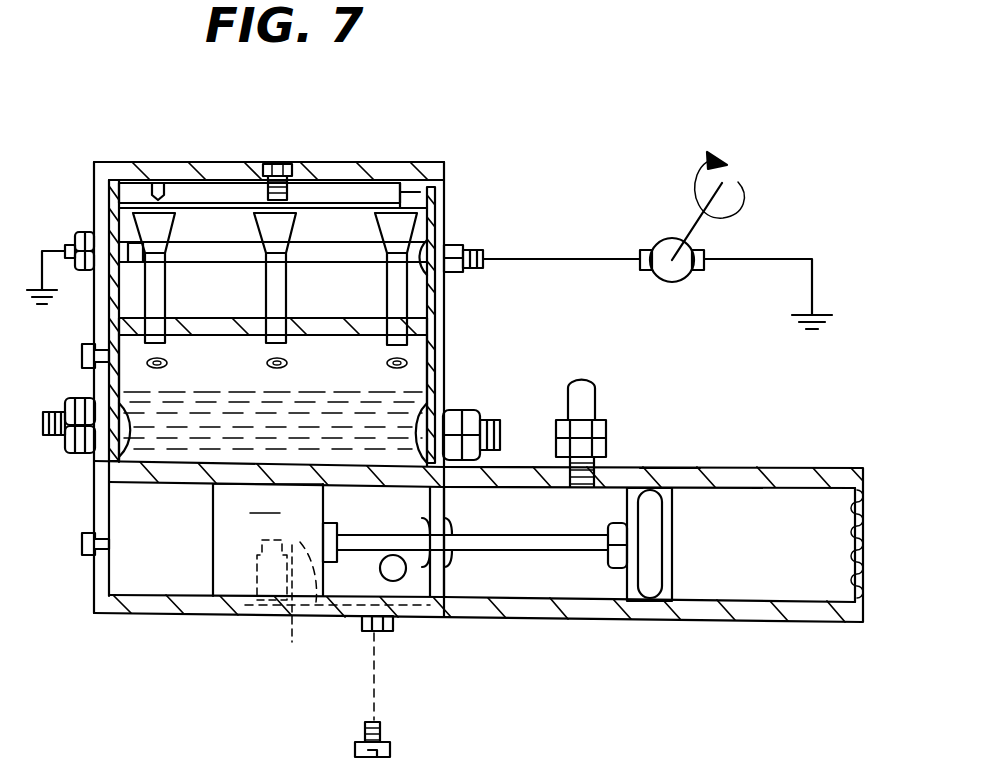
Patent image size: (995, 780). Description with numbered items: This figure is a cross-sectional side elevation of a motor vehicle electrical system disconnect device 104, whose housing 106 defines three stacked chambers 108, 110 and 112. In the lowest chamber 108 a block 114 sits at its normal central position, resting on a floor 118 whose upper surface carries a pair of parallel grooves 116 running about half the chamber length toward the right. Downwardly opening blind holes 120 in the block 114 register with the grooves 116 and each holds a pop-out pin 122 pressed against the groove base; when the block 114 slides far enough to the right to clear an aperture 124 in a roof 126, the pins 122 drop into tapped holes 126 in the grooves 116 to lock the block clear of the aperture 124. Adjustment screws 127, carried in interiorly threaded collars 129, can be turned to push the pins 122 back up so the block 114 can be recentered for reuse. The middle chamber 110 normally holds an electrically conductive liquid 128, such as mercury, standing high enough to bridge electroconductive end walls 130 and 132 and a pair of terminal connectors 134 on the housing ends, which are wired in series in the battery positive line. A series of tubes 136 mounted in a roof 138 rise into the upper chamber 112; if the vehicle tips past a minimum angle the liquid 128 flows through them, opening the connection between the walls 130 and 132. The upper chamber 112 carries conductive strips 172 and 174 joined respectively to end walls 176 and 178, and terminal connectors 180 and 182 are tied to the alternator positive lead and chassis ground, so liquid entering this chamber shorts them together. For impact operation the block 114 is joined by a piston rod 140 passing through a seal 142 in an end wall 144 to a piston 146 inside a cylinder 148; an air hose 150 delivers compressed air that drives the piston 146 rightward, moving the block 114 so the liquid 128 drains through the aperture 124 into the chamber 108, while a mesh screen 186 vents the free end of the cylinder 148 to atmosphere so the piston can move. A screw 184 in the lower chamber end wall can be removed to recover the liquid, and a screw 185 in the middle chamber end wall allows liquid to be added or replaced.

The motor vehicle electrical system disconnect device 104 is at (579, 336).
The housing 106 is at (448, 312).
The chamber 108 is at (160, 613).
The chamber 110 is at (403, 392).
The chamber 112 is at (342, 240).
The block 114 is at (270, 500).
The grooves 116 is at (337, 561).
The floor 118 is at (130, 597).
The blind holes 120 is at (282, 607).
The pop-out pin 122 is at (250, 580).
The aperture 124 is at (285, 468).
The roof / tapped holes 126 is at (352, 492).
The adjustment screws 127 is at (390, 742).
The electrically conductive liquid 128 is at (200, 396).
The interiorly threaded collars 129 is at (388, 633).
The electroconductive end wall 130 is at (420, 352).
The electroconductive end wall 132 is at (110, 345).
The electrical terminal connectors 134 is at (468, 410).
The tubes 136 is at (205, 216).
The roof 138 is at (318, 318).
The piston rod 140 is at (533, 552).
The seal 142 is at (450, 565).
The end wall 144 is at (444, 503).
The piston 146 is at (662, 548).
The cylinder 148 is at (650, 470).
The air hose 150 is at (592, 390).
The electrically conductive strip 172 is at (322, 186).
The electrically conductive strip 174 is at (370, 190).
The electrically conductive end wall 176 is at (428, 230).
The electrically conductive end wall 178 is at (120, 297).
The terminal connector 180 is at (465, 258).
The terminal connector 182 is at (80, 232).
The screw 184 is at (80, 557).
The screw 185 is at (80, 356).
The mesh screen 186 is at (860, 500).